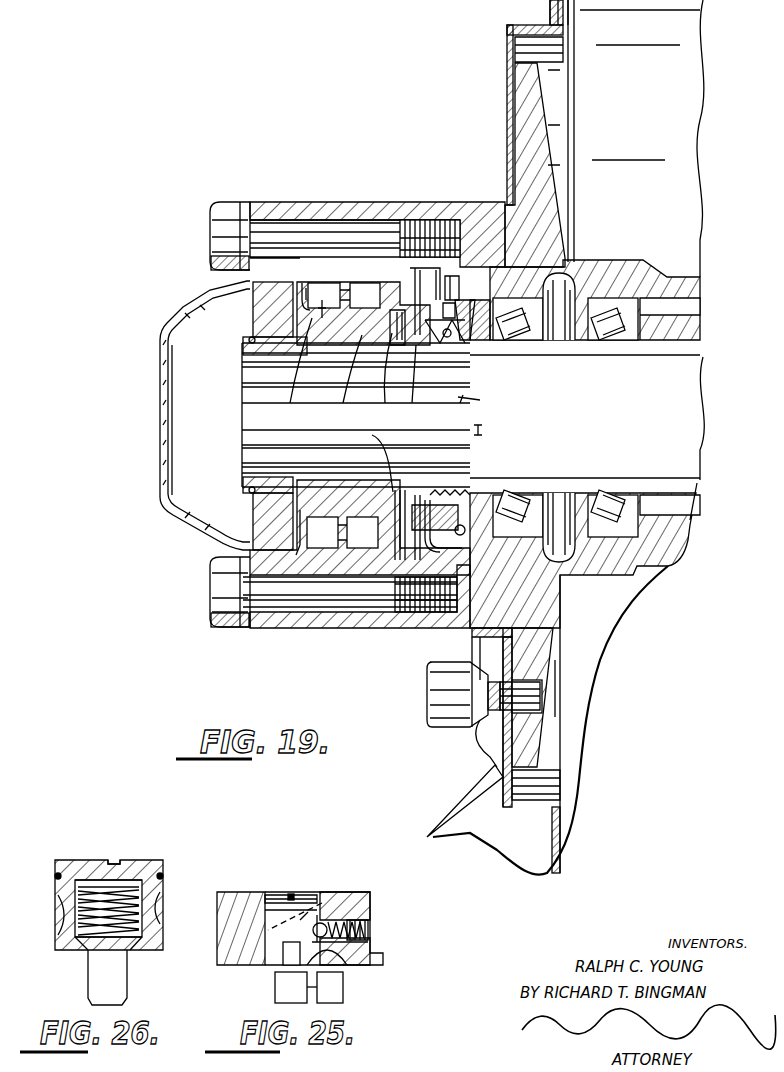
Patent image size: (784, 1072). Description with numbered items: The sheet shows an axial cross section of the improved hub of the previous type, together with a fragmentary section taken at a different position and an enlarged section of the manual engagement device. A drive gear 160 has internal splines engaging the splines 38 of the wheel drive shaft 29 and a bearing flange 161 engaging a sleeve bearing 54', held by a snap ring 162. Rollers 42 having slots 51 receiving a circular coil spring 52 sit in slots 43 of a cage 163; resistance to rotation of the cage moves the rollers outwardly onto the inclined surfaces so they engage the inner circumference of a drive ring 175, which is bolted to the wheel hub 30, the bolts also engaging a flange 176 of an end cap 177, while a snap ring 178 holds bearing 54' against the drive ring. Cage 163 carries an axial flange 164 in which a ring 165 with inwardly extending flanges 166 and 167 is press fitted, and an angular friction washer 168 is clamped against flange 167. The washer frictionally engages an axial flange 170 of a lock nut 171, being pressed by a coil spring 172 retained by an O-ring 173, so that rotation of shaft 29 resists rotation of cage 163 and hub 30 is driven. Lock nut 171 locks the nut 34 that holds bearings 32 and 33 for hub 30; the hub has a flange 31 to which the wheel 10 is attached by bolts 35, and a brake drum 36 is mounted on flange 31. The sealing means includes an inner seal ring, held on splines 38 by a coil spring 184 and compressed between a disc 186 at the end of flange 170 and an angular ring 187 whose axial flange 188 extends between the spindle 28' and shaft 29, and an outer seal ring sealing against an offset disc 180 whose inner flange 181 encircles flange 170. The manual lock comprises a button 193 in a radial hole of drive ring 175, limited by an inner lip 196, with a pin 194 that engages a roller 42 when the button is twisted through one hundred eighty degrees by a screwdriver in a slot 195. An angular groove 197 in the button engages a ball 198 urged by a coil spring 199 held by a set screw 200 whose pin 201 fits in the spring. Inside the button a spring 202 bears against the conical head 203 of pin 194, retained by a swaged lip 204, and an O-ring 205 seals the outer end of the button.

In FIG. 19, the wheel 10 is at (478, 792).
In FIG. 19, the spindle 28' is at (717, 500).
In FIG. 19, the wheel drive shaft 29 is at (705, 392).
In FIG. 19, the wheel hub 30 is at (590, 267).
In FIG. 19, the flange 31 is at (548, 103).
In FIG. 19, the bearing 32 is at (524, 337).
In FIG. 19, the bearing 33 is at (620, 340).
In FIG. 19, the nut 34 is at (472, 343).
In FIG. 19, the bolts 35 is at (532, 695).
In FIG. 19, the brake drum 36 is at (506, 65).
In FIG. 19, the splines 38 is at (482, 404).
In FIG. 19, the rollers 42 is at (359, 411).
In FIG. 25, the rollers 42 is at (275, 990).
In FIG. 19, the slots 43 is at (322, 300).
In FIG. 19, the slots 51 is at (322, 532).
In FIG. 19, the circular coil spring 52 is at (343, 415).
In FIG. 19, the sleeve bearing 54' is at (252, 416).
In FIG. 19, the drive gear 160 is at (360, 428).
In FIG. 19, the bearing flange 161 is at (252, 478).
In FIG. 19, the snap ring 162 is at (250, 338).
In FIG. 19, the cage 163 is at (282, 372).
In FIG. 19, the axial flange 164 is at (385, 300).
In FIG. 19, the ring 165 is at (418, 290).
In FIG. 19, the flange 166 is at (339, 380).
In FIG. 19, the flange 167 is at (441, 299).
In FIG. 19, the angular friction washer 168 is at (420, 385).
In FIG. 19, the axial flange 170 is at (462, 350).
In FIG. 19, the lock nut 171 is at (463, 321).
In FIG. 19, the coil spring 172 is at (379, 379).
In FIG. 19, the O-ring 173 is at (368, 459).
In FIG. 19, the drive ring 175 is at (328, 205).
In FIG. 25, the drive ring 175 is at (245, 910).
In FIG. 19, the flange 176 is at (246, 630).
In FIG. 19, the end cap 177 is at (165, 410).
In FIG. 19, the snap ring 178 is at (305, 284).
In FIG. 19, the offset disc 180 is at (416, 222).
In FIG. 19, the offset inner flange 181 is at (440, 552).
In FIG. 19, the coil spring 184 is at (465, 470).
In FIG. 19, the disc 186 is at (461, 415).
In FIG. 19, the angular ring 187 is at (455, 480).
In FIG. 19, the axial flange 188 is at (460, 490).
In FIG. 26, the button 193 is at (150, 866).
In FIG. 25, the button 193 is at (290, 894).
In FIG. 26, the pin 194 is at (120, 990).
In FIG. 25, the pin 194 is at (283, 952).
In FIG. 26, the slot 195 is at (108, 862).
In FIG. 25, the slot 195 is at (305, 892).
In FIG. 25, the inner lip 196 is at (347, 965).
In FIG. 26, the groove 197 is at (62, 912).
In FIG. 25, the groove 197 is at (322, 915).
In FIG. 25, the ball 198 is at (326, 920).
In FIG. 25, the coil spring 199 is at (330, 922).
In FIG. 25, the set screw 200 is at (368, 930).
In FIG. 25, the pin 201 is at (366, 921).
In FIG. 26, the spring 202 is at (85, 880).
In FIG. 26, the conical head 203 is at (128, 952).
In FIG. 26, the lip 204 is at (85, 952).
In FIG. 26, the O-ring 205 is at (55, 877).
In FIG. 25, the O-ring 205 is at (322, 913).